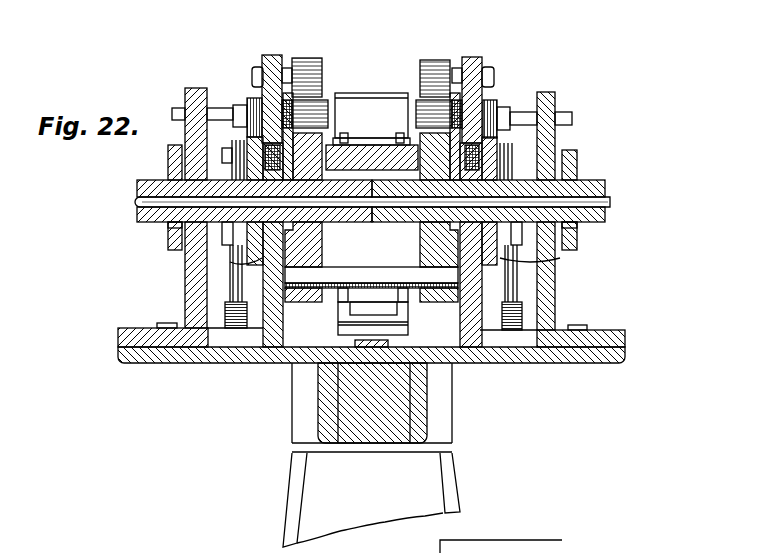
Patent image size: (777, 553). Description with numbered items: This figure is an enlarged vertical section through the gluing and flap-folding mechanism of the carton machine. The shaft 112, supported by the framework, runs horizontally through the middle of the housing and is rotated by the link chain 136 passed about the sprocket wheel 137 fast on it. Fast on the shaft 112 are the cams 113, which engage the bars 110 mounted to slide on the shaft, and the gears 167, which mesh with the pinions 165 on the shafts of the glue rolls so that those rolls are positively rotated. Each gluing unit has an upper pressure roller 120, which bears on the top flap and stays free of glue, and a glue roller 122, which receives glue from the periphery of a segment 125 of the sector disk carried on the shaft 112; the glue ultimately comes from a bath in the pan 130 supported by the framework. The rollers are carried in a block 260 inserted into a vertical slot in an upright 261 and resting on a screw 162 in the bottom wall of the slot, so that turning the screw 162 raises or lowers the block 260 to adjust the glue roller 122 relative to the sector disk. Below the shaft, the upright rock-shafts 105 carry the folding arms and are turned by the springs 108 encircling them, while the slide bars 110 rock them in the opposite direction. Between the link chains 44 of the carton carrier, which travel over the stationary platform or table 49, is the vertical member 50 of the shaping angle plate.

The block 260 is at (273, 55).
The upper roller 120 is at (322, 62).
The glue roller 122 is at (307, 112).
The vertical member 50 is at (370, 107).
The link chain 44 is at (390, 137).
The pinion 165 is at (252, 100).
The link chain 136 is at (228, 157).
The sprocket wheel 137 is at (230, 165).
The shaft 112 is at (133, 200).
The slide bar 110 is at (582, 238).
The cam 113 is at (168, 240).
The rock-shaft 105 is at (230, 258).
The gear 167 is at (258, 258).
The spring 108 is at (230, 313).
The upright 261 is at (374, 259).
The pan 130 is at (365, 268).
The segment 125 is at (310, 244).
The screw 162 is at (280, 168).
The platform or table 49 is at (378, 160).